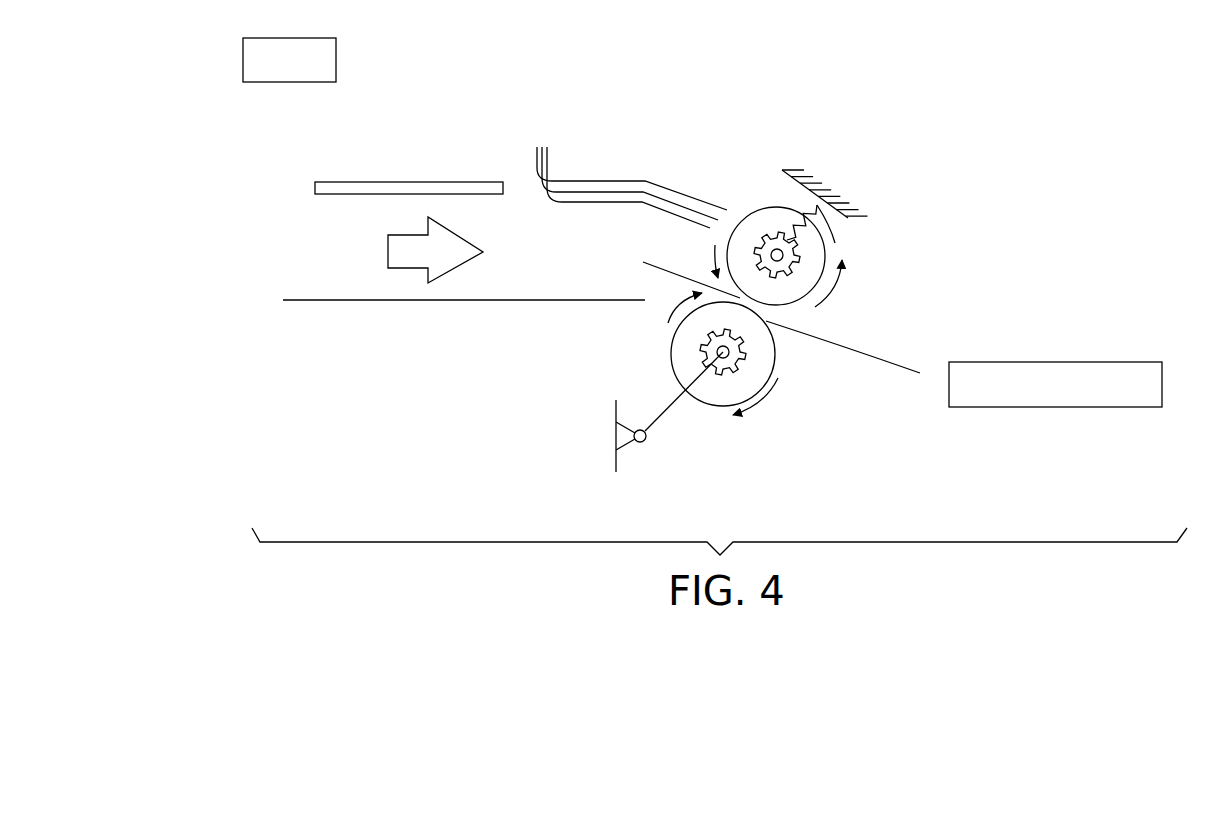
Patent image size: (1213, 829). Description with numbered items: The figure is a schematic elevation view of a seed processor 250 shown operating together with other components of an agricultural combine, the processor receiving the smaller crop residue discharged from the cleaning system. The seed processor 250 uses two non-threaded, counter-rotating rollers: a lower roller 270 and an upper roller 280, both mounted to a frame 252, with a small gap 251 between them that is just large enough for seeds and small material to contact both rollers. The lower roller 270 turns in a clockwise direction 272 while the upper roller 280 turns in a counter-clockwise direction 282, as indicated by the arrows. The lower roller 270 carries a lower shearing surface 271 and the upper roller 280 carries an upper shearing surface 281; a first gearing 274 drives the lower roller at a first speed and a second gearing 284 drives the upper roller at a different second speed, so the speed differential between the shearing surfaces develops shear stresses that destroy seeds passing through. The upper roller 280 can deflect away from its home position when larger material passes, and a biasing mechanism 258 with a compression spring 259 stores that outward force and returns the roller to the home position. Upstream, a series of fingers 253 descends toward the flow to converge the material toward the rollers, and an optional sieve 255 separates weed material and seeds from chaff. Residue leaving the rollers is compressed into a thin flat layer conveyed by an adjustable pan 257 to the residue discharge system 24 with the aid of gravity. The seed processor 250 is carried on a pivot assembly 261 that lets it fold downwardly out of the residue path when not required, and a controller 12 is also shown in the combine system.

The controller 12 is at (240, 55).
The residue discharge system 24 is at (1068, 357).
The seed processor 250 is at (925, 105).
The gap 251 is at (665, 265).
The frame 252 is at (616, 412).
The fingers 253 is at (626, 174).
The sieve 255 is at (410, 182).
The adjustable pan 257 is at (883, 360).
The biasing mechanism 258 is at (803, 205).
The compression spring 259 is at (835, 243).
The pivot assembly 261 is at (637, 449).
The lower roller 270 is at (709, 388).
The lower shearing surface 271 is at (775, 355).
The clockwise direction 272 is at (765, 400).
The first gearing 274 is at (702, 352).
The upper roller 280 is at (770, 217).
The upper shearing surface 281 is at (830, 240).
The counter-clockwise direction 282 is at (838, 280).
The second gearing 284 is at (757, 212).